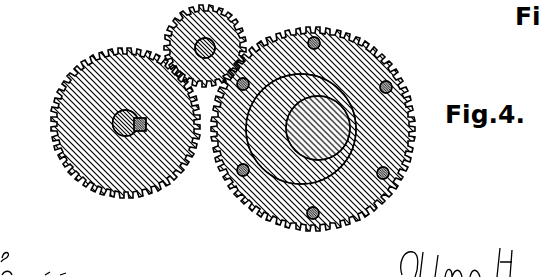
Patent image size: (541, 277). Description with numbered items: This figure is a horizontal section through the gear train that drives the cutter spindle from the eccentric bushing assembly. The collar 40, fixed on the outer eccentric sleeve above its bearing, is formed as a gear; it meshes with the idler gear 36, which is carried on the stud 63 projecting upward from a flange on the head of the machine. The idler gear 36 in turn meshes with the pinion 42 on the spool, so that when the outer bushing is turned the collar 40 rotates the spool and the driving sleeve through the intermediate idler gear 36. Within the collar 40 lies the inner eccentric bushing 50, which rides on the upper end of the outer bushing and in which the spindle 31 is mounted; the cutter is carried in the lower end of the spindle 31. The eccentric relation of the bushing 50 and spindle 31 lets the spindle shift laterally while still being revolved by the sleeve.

The fixed collar 40 is at (378, 55).
The inner eccentric bushing 50 is at (278, 93).
The spindle 31 is at (322, 130).
The pinion 42 is at (82, 88).
The idler gear 36 is at (185, 29).
The stud 63 is at (211, 42).